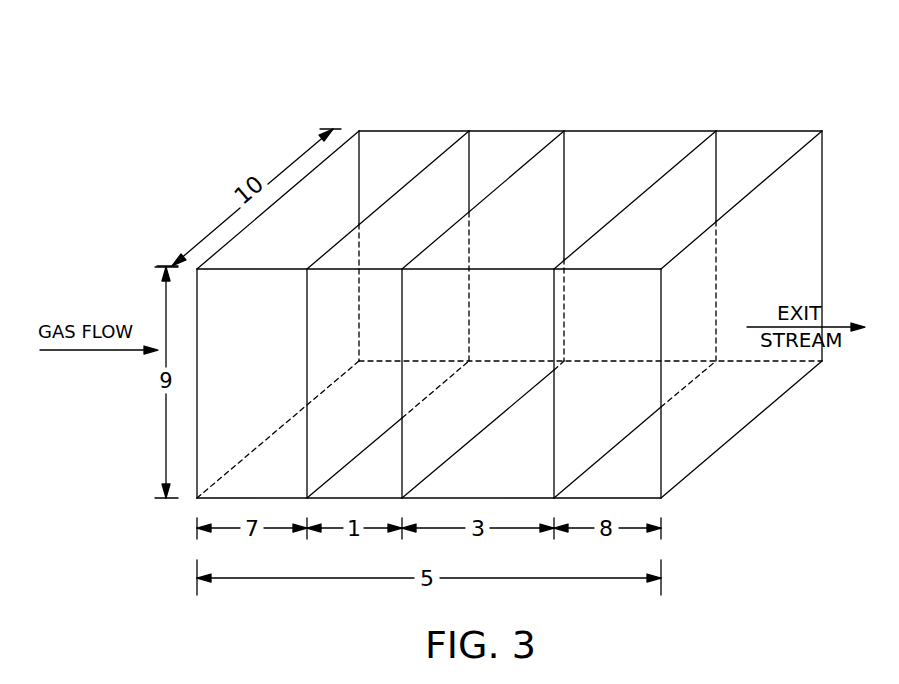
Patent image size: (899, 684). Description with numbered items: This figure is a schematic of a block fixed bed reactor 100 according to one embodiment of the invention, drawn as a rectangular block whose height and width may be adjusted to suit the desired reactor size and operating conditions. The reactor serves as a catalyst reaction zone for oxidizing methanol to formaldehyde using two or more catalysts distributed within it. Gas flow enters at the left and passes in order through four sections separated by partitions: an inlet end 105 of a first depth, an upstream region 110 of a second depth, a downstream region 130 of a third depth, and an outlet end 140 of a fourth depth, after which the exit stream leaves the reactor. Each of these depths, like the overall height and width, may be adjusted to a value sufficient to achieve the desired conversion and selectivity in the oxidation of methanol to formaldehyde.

The gas flow apparatus 100 is at (647, 98).
The inlet end 105 is at (401, 131).
The upstream region 110 is at (518, 131).
The downstream region 130 is at (654, 134).
The outlet end 140 is at (778, 131).